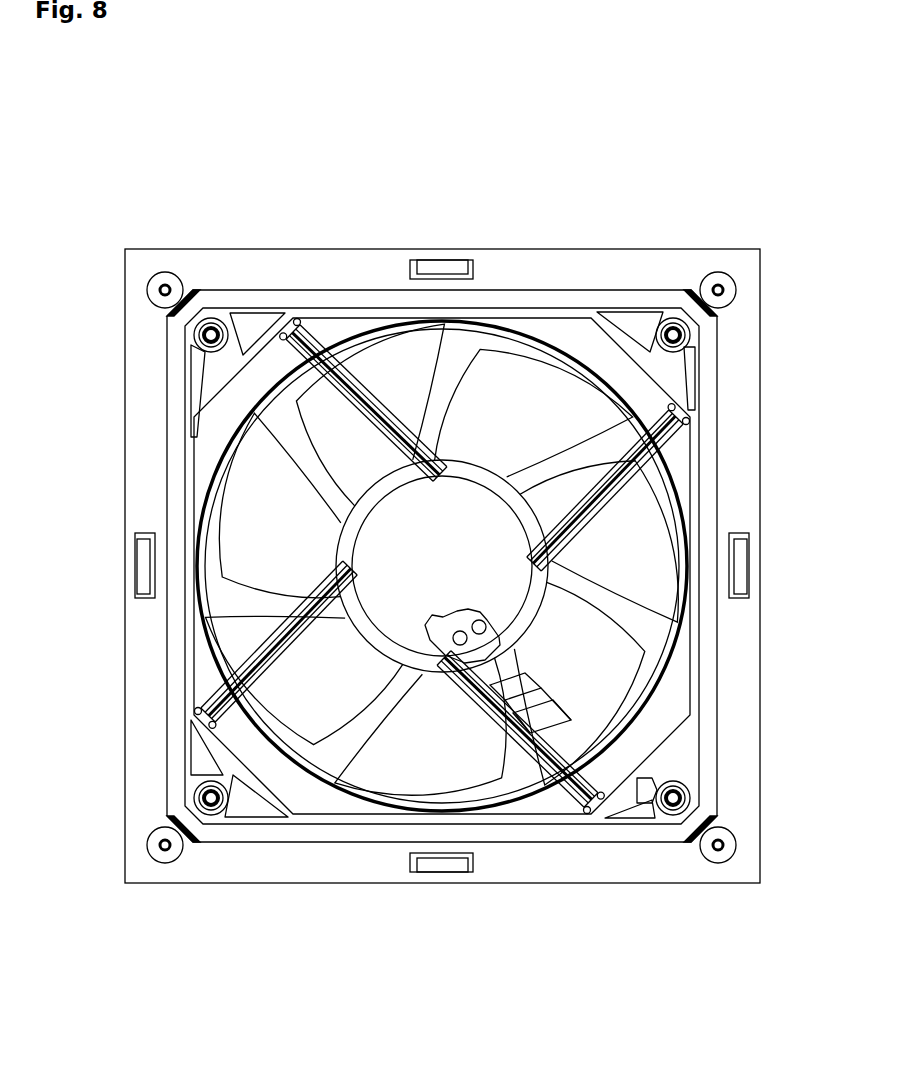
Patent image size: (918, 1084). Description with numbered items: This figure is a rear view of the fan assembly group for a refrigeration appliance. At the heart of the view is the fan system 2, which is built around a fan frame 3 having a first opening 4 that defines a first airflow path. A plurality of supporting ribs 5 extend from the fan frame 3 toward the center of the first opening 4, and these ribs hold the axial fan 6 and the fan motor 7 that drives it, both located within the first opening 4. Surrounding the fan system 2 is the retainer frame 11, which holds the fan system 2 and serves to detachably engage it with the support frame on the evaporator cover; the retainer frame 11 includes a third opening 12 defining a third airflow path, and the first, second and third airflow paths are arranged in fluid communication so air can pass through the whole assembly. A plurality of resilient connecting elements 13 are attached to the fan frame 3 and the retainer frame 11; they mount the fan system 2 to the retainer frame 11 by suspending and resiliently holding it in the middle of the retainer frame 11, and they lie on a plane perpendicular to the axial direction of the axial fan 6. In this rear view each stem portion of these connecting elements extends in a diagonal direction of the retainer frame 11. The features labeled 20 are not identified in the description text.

The fan system 2 is at (597, 300).
The fan frame 3 is at (528, 313).
The first opening 4 is at (447, 348).
The supporting ribs 5 is at (292, 620).
The axial fan 6 is at (240, 580).
The fan motor 7 is at (466, 505).
The retainer frame 11 is at (258, 255).
The third opening 12 is at (460, 353).
The resilient connecting elements 13 is at (147, 291).
The fastening tab 20 is at (437, 254).